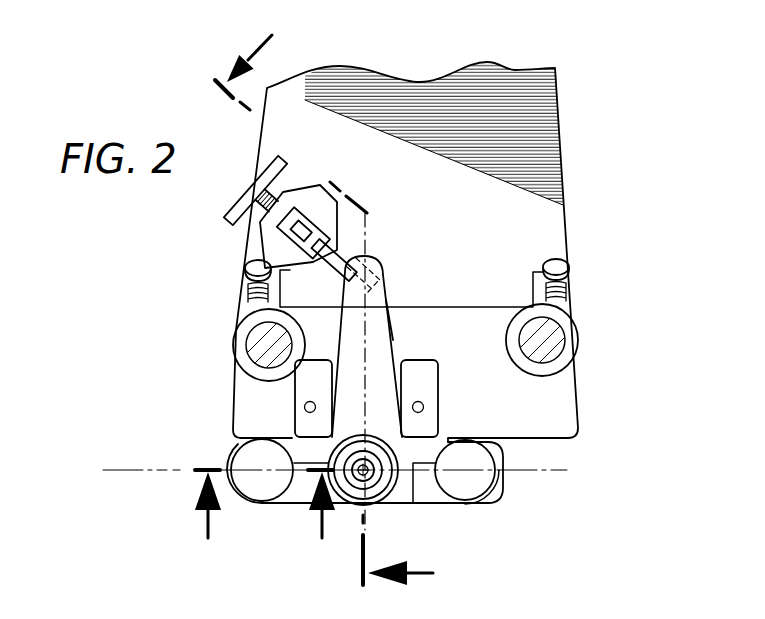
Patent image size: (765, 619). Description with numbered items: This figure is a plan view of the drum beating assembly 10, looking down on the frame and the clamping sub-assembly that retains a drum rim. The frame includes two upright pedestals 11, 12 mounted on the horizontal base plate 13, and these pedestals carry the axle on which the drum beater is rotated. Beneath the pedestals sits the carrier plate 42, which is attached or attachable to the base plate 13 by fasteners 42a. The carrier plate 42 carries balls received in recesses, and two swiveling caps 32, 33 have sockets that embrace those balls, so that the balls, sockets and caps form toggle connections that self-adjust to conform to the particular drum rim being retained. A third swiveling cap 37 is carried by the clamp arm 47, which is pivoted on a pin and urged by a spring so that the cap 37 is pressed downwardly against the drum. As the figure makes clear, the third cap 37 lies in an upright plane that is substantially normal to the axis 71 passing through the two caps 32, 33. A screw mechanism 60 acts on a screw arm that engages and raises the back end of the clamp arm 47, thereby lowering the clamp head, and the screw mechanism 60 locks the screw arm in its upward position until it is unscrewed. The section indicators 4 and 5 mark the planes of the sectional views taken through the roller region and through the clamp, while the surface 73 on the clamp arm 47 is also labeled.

The section line 4- 4 is at (265, 522).
The section line 5- 5 is at (337, 299).
The drum beating assembly 10 is at (580, 453).
The upright pedestal 11 is at (550, 340).
The upright pedestal 12 is at (257, 347).
The horizontal base plate 13 is at (552, 233).
The swiveling cap 32 is at (247, 455).
The swiveling cap 33 is at (475, 482).
The swiveling cap 37 is at (373, 495).
The carrier plate 42 is at (432, 507).
The fasteners 42a is at (421, 410).
The clamp arm 47 is at (362, 263).
The screw mechanism 60 is at (249, 240).
The axis 71 is at (132, 470).
The post side surface 73 is at (367, 347).